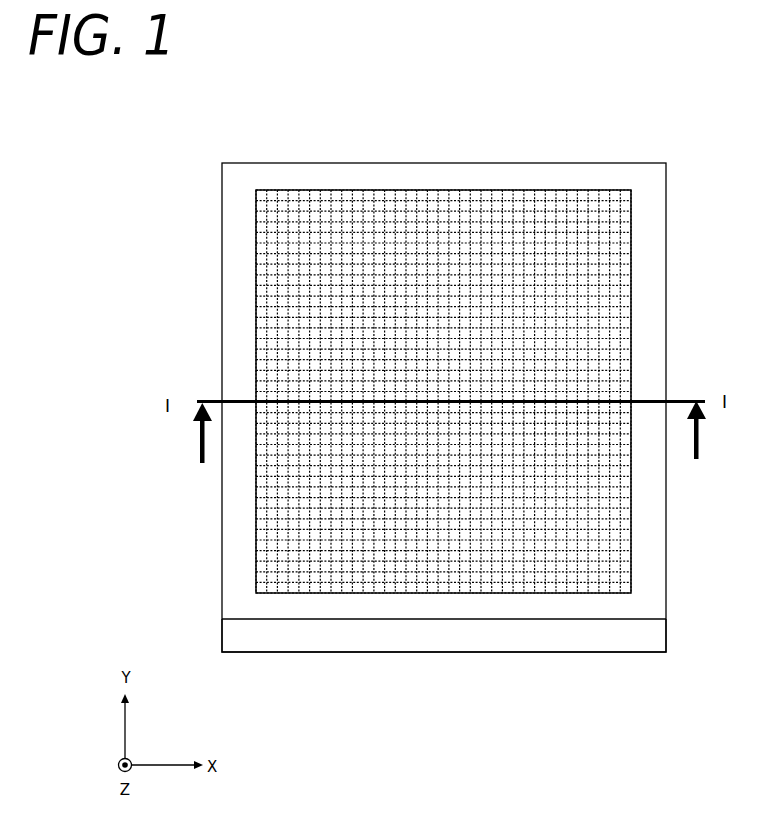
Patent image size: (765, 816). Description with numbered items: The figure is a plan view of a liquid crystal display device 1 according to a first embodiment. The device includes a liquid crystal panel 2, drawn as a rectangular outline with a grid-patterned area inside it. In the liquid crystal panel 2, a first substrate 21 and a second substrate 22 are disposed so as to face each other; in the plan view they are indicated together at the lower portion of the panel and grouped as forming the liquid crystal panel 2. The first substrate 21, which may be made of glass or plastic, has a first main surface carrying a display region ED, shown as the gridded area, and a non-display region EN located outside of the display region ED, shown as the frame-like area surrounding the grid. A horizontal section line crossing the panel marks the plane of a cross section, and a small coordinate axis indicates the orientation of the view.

The liquid crystal display device 1 is at (398, 81).
The liquid crystal panel 2 is at (400, 685).
The first substrate 21 is at (340, 618).
The second substrate 22 is at (383, 643).
The display region ED is at (437, 213).
The non-display region EN is at (570, 173).